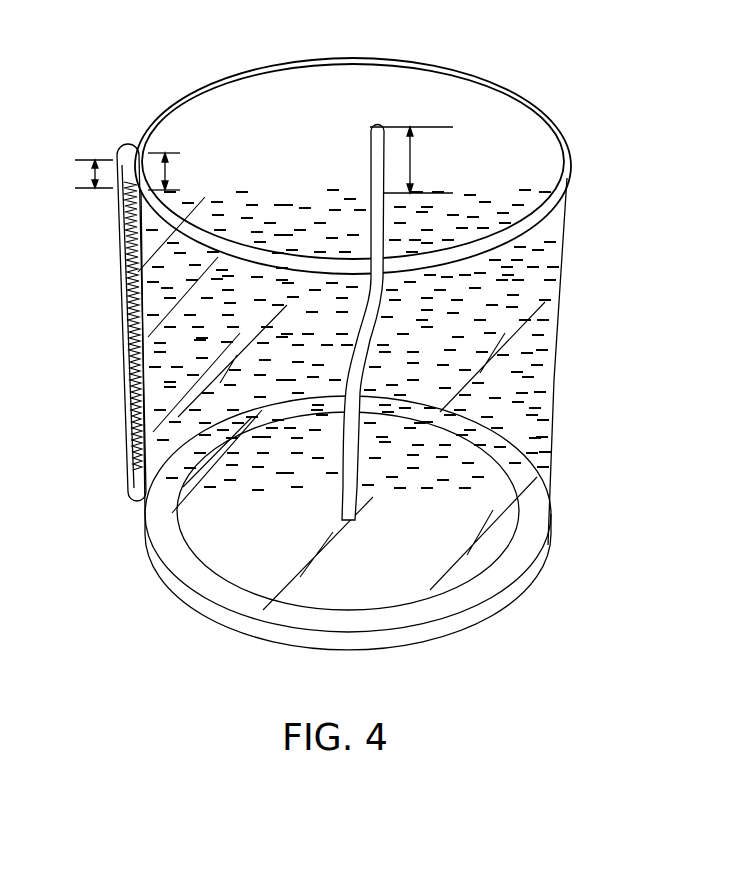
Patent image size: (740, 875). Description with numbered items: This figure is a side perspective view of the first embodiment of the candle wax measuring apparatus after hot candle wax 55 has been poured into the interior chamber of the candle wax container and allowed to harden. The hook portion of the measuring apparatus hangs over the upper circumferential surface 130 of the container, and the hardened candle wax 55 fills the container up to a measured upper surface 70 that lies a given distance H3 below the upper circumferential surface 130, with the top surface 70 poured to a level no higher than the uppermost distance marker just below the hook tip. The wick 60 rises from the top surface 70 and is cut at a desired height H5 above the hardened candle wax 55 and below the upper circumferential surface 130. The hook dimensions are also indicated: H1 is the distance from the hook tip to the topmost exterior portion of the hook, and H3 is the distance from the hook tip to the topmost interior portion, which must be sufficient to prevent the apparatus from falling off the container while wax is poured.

The wick 60 is at (372, 124).
The upper circumferential surface 130 is at (556, 134).
The upper surface of the candle wax 70 is at (498, 213).
The candle wax 55 is at (455, 297).
The distance from hook tip to topmost exterior portion H1 is at (175, 171).
The distance from hook tip to topmost interior portion H3 is at (82, 174).
The wick height H5 is at (411, 160).